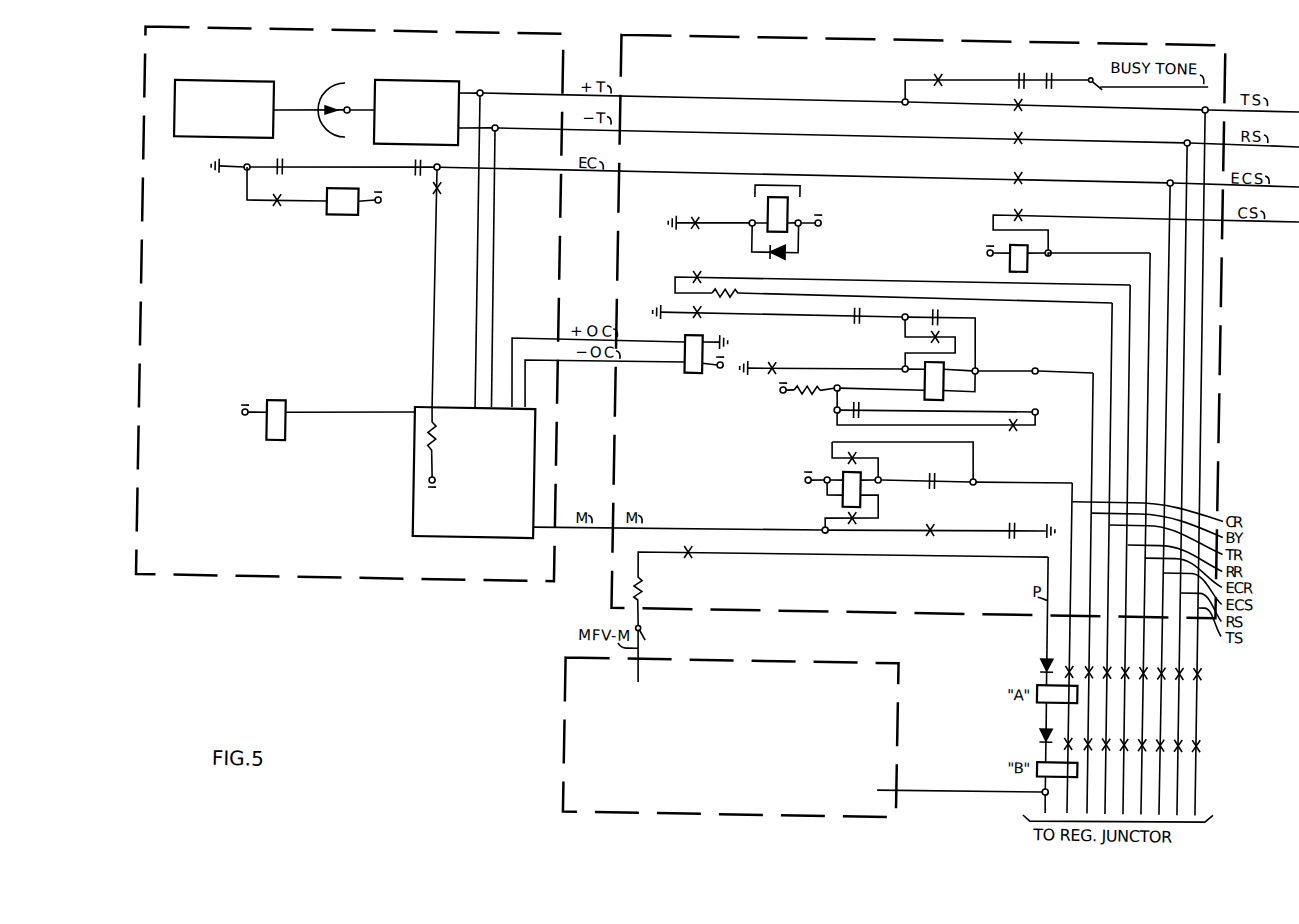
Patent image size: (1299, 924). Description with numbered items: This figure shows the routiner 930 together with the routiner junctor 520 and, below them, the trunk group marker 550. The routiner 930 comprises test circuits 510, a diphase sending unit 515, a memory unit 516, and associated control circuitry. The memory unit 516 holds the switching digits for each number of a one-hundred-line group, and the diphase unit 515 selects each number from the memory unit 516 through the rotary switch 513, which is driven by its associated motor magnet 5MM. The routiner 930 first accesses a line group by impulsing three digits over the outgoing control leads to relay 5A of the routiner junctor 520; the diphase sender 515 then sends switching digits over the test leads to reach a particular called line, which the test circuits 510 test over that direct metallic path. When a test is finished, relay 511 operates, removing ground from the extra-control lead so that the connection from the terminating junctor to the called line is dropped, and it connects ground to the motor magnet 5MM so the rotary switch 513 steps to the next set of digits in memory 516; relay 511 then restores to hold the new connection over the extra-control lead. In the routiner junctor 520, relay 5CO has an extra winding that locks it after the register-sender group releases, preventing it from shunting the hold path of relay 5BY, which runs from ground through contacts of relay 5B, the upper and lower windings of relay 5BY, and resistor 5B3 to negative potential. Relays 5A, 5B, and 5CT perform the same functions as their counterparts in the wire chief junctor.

The routiner 930 is at (228, 565).
The routiner junctor 520 is at (854, 54).
The trunk group marker 550 is at (744, 764).
The memory unit 516 is at (224, 109).
The diphase sending unit 515 is at (416, 112).
The rotary switch 513 is at (347, 82).
The test circuits 510 is at (474, 472).
The relay 511 is at (264, 433).
The motor magnet 5MM is at (359, 209).
The relay 5B is at (769, 199).
The relay 5CT is at (1032, 254).
The relay 5A is at (694, 363).
The relay 5BY is at (931, 364).
The resistor 5B3 is at (822, 384).
The relay 5CO is at (852, 485).